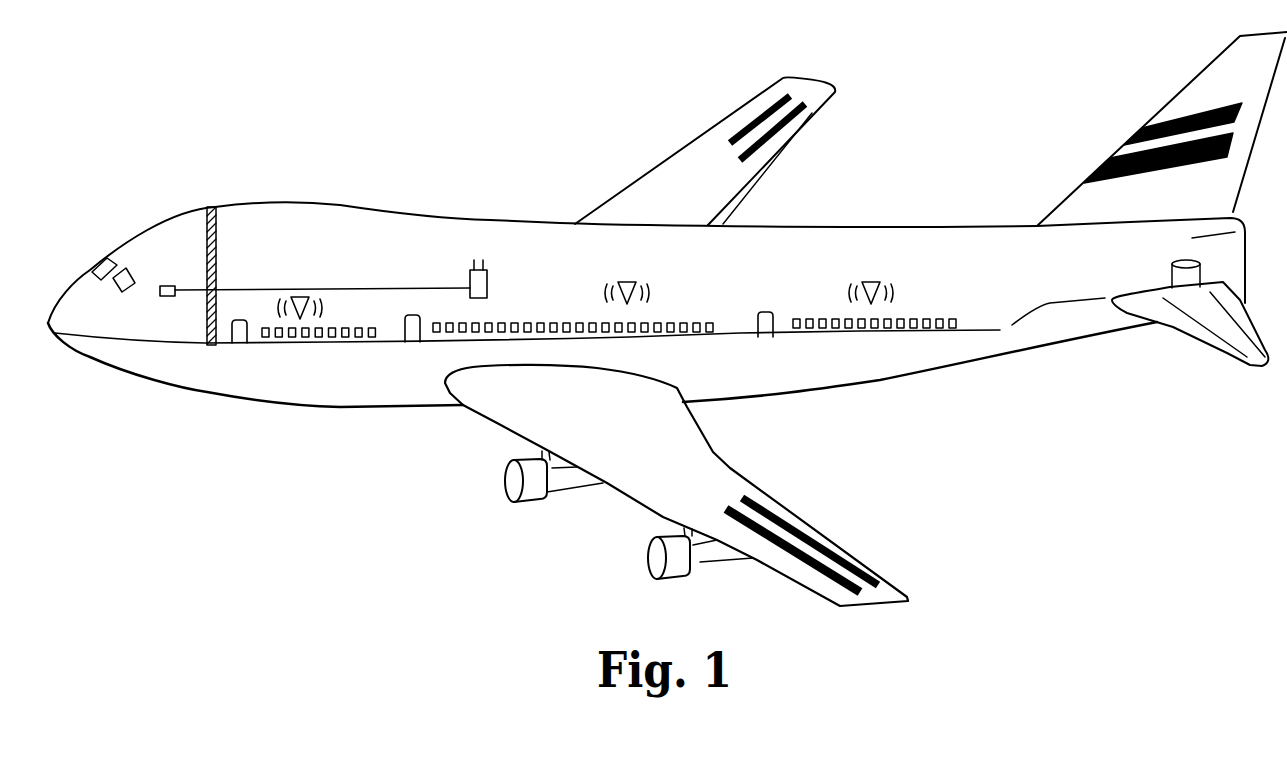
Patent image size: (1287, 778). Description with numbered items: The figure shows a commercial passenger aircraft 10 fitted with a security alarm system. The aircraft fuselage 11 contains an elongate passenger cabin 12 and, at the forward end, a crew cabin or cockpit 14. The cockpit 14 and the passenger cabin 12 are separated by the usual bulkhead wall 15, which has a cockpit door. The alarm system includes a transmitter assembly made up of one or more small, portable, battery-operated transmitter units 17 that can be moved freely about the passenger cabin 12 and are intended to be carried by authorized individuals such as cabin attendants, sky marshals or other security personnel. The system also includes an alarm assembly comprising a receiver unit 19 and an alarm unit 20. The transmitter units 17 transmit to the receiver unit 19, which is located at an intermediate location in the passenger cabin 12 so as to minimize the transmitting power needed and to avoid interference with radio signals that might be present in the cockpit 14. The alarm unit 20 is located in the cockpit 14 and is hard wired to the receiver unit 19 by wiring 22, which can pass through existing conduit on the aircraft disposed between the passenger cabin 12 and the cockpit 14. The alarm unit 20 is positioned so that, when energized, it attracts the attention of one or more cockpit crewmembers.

The commercial passenger aircraft 10 is at (277, 155).
The aircraft fuselage 11 is at (775, 397).
The passenger cabin 12 is at (531, 240).
The cockpit 14 is at (137, 320).
The bulkhead wall 15 is at (212, 345).
The transmitter units 17 is at (643, 282).
The receiver unit 19 is at (478, 254).
The alarm unit 20 is at (165, 285).
The wiring 22 is at (351, 292).